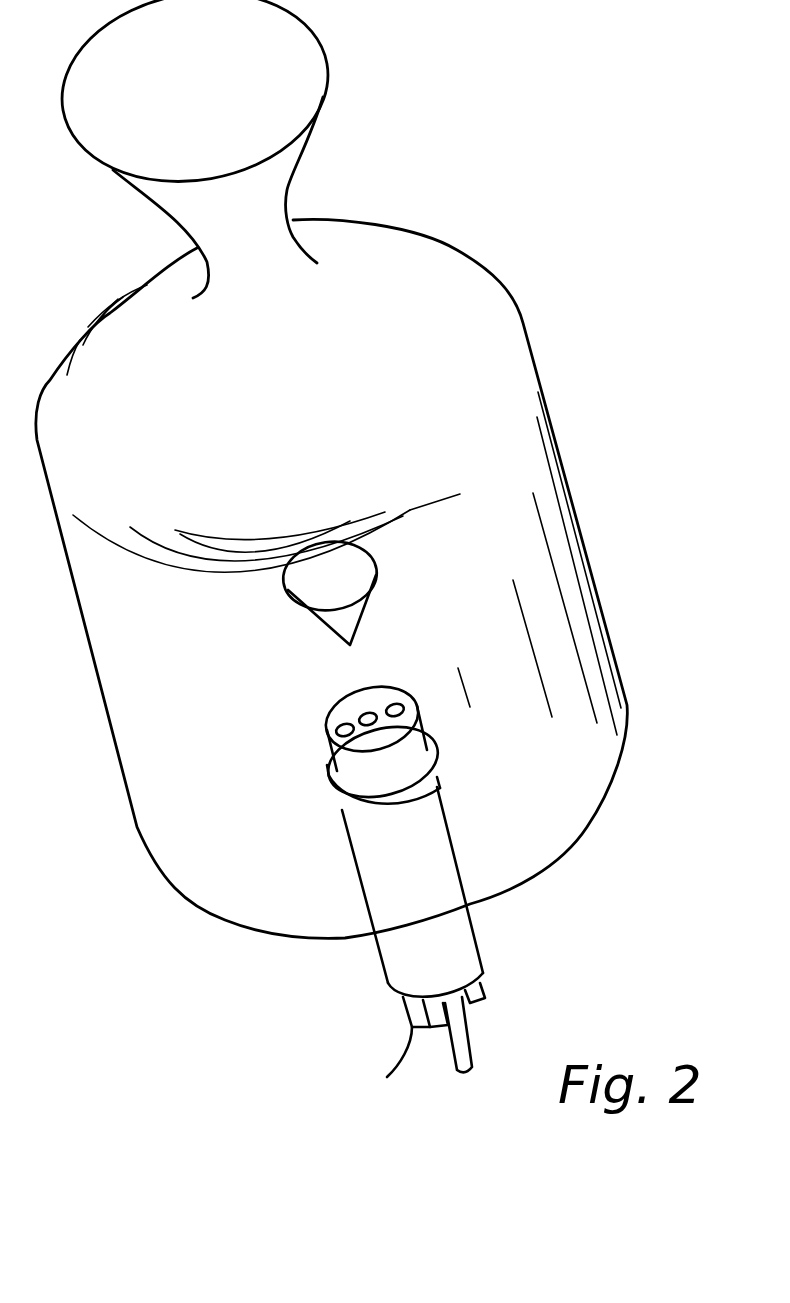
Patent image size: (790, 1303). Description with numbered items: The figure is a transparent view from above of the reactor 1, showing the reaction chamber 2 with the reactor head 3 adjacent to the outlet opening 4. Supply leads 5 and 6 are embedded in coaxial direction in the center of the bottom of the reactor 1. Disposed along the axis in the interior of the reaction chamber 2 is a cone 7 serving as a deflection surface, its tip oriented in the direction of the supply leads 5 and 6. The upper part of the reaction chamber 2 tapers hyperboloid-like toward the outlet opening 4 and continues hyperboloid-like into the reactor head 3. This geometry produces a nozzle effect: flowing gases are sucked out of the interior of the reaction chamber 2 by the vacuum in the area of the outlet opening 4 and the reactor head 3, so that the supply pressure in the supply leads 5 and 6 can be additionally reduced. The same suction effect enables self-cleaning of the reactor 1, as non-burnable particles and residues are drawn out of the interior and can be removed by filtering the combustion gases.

The reactor 1 is at (331, 550).
The reaction chamber 2 is at (537, 468).
The reactor head 3 is at (328, 63).
The outlet opening 4 is at (270, 263).
The supply lead 5 is at (457, 1072).
The supply lead 6 is at (383, 963).
The cone 7 is at (347, 620).